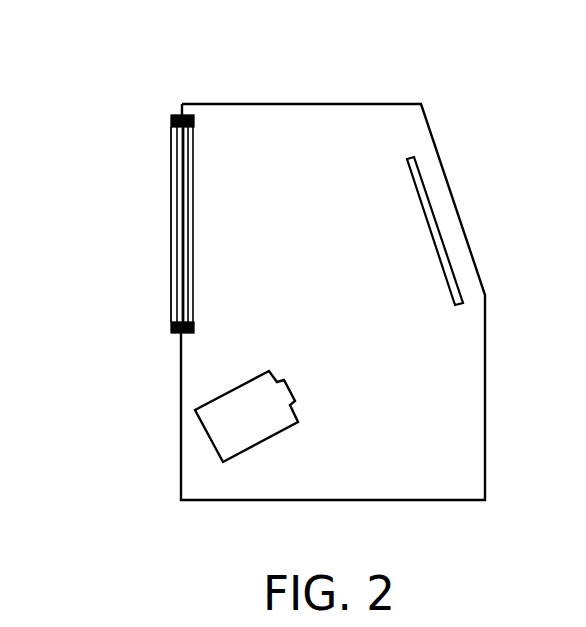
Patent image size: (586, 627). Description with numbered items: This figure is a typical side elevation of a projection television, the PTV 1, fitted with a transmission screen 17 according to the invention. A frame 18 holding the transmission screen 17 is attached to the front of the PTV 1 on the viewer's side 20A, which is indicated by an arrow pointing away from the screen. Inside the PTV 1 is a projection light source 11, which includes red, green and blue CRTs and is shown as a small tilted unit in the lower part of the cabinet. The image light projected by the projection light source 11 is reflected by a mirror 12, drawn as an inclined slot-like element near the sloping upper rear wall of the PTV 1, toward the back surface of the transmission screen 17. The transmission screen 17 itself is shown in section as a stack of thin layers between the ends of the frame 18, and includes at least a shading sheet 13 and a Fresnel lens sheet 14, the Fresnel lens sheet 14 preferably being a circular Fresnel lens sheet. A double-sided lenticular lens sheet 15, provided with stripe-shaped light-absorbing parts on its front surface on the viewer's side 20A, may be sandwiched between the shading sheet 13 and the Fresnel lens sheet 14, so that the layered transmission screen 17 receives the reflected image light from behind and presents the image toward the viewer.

The PTV 1 is at (462, 165).
The projection light source 11 is at (265, 430).
The mirror 12 is at (440, 233).
The shading sheet 13 is at (170, 178).
The Fresnel lens sheet 14 is at (187, 155).
The double-sided lenticular lens sheet 15 is at (182, 140).
The transmission screen 17 is at (193, 68).
The frame 18 is at (168, 325).
The viewer's side 20A is at (167, 223).